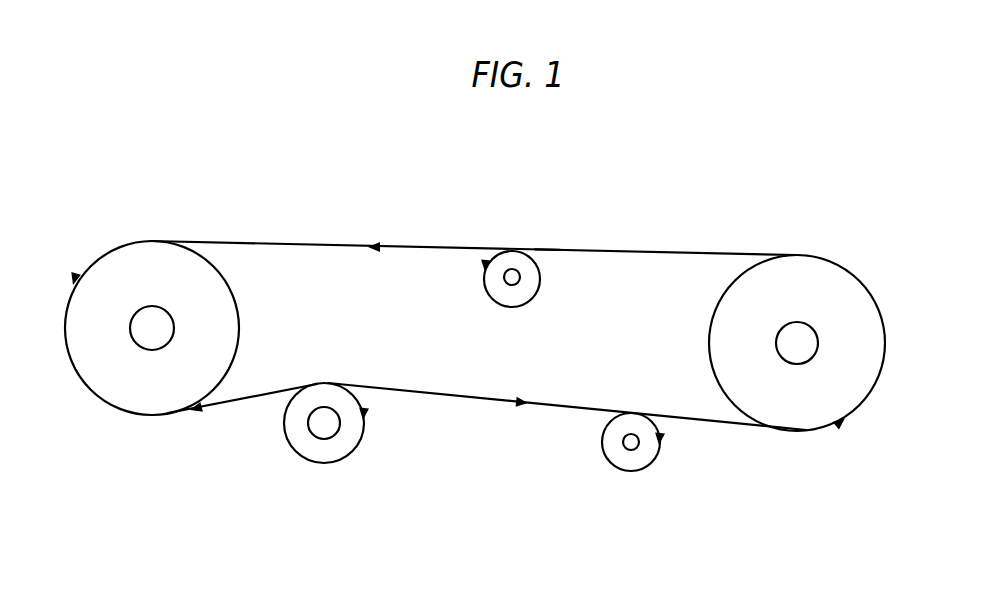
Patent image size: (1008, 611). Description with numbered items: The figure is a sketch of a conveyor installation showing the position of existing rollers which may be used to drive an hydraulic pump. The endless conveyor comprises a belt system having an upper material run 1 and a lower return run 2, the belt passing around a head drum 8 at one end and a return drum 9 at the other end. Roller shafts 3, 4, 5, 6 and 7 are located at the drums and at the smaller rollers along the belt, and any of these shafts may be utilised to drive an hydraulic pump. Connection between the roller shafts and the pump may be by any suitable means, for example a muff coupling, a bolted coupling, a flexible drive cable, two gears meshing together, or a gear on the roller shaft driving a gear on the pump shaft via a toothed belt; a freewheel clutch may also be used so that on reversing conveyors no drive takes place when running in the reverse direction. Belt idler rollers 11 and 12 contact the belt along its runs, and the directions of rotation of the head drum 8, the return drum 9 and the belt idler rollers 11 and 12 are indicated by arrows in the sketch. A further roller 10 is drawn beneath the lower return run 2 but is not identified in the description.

The upper material run 1 is at (273, 241).
The lower return run 2 is at (488, 401).
The roller shaft 3 is at (152, 328).
The roller shaft 4 is at (324, 424).
The roller shaft 5 is at (632, 446).
The roller shaft 6 is at (797, 345).
The roller shaft 7 is at (511, 266).
The head drum 8 is at (111, 372).
The return drum 9 is at (861, 363).
The roller 10 is at (286, 431).
The belt idler roller 11 is at (600, 448).
The belt idler roller 12 is at (546, 263).